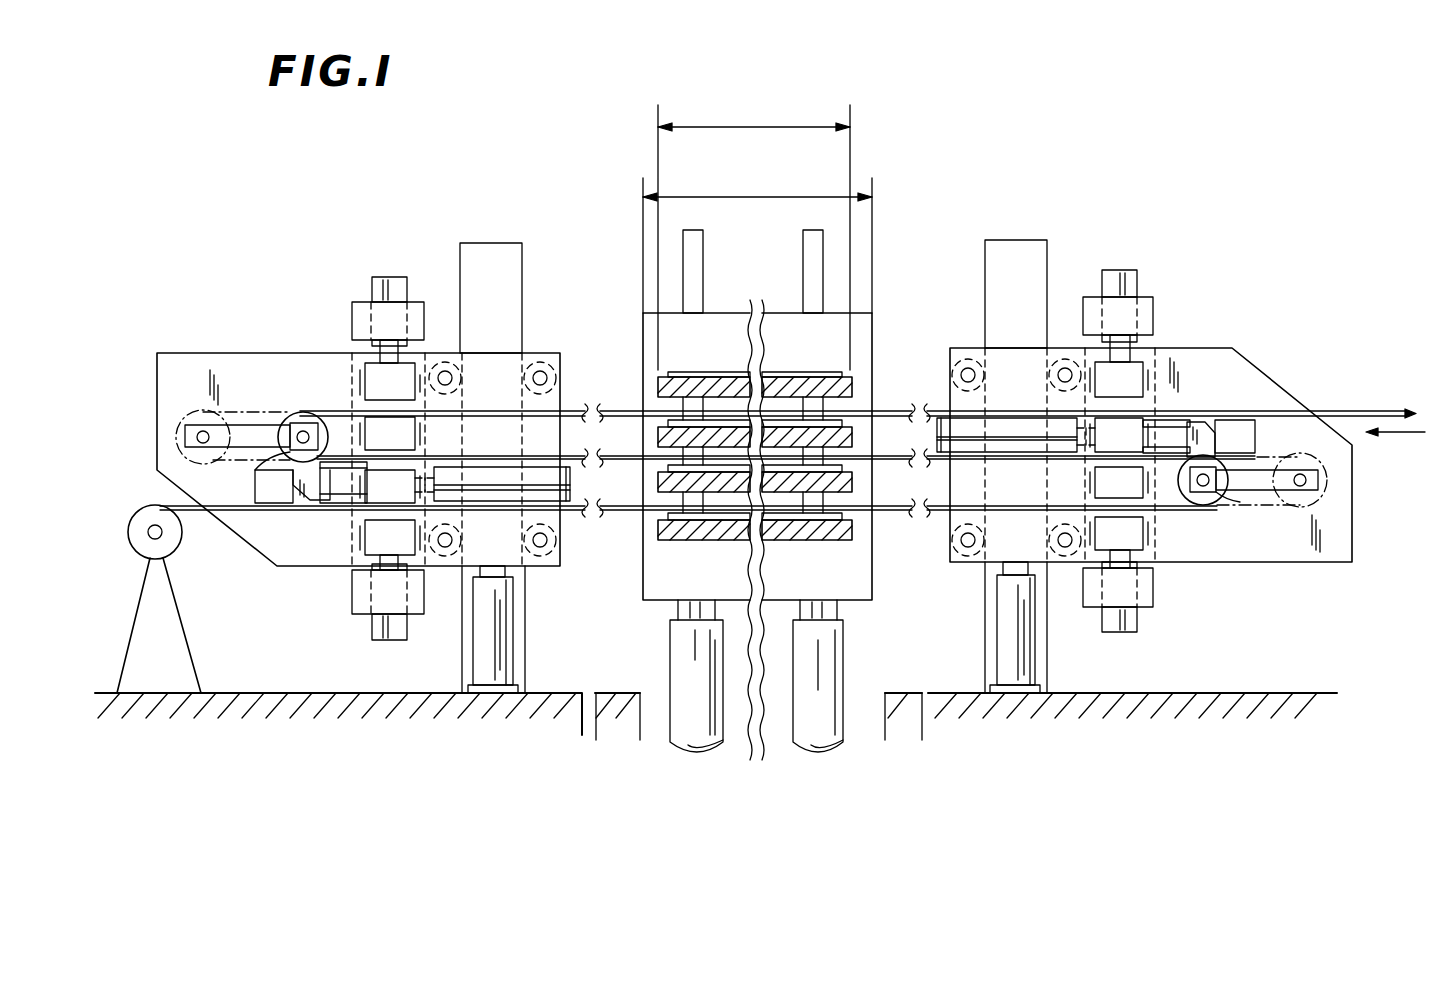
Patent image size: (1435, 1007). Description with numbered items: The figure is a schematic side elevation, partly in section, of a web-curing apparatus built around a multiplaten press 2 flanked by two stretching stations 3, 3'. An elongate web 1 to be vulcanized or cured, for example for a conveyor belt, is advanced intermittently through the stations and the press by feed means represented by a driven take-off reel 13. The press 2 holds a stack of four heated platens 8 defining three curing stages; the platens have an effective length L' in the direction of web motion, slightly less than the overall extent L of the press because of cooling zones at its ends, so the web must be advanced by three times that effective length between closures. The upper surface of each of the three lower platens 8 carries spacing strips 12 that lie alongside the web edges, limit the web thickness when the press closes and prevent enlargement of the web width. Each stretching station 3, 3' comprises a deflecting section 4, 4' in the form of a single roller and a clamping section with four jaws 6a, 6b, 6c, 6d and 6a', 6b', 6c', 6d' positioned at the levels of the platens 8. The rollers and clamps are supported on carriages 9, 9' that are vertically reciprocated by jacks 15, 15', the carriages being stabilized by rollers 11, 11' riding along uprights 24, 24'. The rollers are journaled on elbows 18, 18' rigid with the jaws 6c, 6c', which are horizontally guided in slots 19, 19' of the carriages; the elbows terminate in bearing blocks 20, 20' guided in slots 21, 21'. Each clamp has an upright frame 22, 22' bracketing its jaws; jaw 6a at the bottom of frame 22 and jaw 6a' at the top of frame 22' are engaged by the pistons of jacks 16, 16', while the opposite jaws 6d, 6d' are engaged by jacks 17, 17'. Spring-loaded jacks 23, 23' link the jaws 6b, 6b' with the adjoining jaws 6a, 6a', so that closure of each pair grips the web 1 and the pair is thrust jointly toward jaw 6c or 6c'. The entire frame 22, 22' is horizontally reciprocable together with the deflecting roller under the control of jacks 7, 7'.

The web 1 is at (1357, 410).
The multiplaten press 2 is at (886, 310).
The stretching station 3 is at (1291, 328).
The stretching station 3' is at (214, 296).
The deflecting section 4 is at (1224, 516).
The deflecting section 4' is at (252, 474).
The jaw 6a is at (1119, 533).
The jaw 6b is at (1119, 482).
The jaw 6c is at (1119, 435).
The jaw 6d is at (1119, 379).
The jaw 6a' is at (390, 381).
The jaw 6b' is at (390, 433).
The jaw 6c' is at (390, 486).
The jaw 6d' is at (390, 537).
The jack 7 is at (1016, 416).
The jack 7' is at (492, 469).
The heated platen 8 is at (692, 380).
The carriage 9 is at (1151, 435).
The carriage 9' is at (365, 439).
The roller 11 is at (993, 474).
The roller 11' is at (518, 447).
The spacing strip 12 is at (820, 355).
The driven take-off reel 13 is at (170, 543).
The jack 15 is at (990, 627).
The jack 15' is at (521, 629).
The jack 16 is at (1136, 634).
The jack 16' is at (399, 270).
The jack 17 is at (1143, 272).
The jack 17' is at (373, 642).
The elbow 18 is at (1182, 417).
The elbow 18' is at (297, 503).
The slot 19 is at (1272, 401).
The slot 19' is at (308, 499).
The bearing block 20 is at (1196, 497).
The bearing block 20' is at (303, 417).
The slot 21 is at (1271, 499).
The slot 21' is at (233, 418).
The upright frame 22 is at (1108, 471).
The upright frame 22' is at (362, 466).
The spring-loaded jack 23 is at (1191, 568).
The spring-loaded jack 23' is at (337, 361).
The upright 24 is at (1040, 455).
The upright 24' is at (498, 447).
The overall extent of the press L is at (755, 179).
The effective length of the platens L' is at (768, 108).